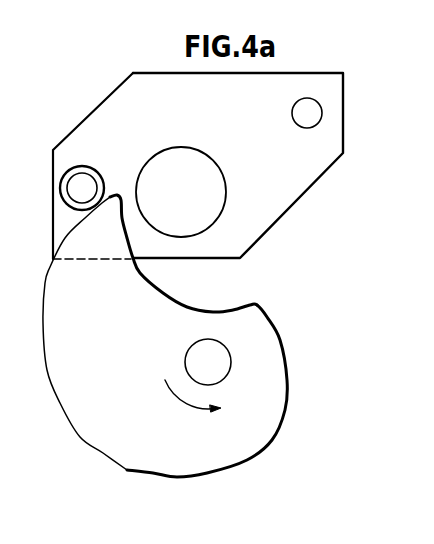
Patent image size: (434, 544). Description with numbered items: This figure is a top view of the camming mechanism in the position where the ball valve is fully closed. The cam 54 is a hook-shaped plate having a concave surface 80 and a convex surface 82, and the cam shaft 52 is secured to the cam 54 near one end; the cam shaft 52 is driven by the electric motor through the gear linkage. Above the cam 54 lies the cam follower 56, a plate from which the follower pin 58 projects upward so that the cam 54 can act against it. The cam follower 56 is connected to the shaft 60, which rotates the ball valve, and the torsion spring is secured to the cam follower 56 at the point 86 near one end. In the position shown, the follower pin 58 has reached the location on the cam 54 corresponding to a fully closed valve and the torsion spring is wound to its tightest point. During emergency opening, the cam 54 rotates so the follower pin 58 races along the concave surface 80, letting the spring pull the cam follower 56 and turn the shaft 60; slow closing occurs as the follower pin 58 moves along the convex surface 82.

The cam shaft 52 is at (197, 363).
The cam 54 is at (165, 336).
The cam follower 56 is at (183, 118).
The follower pin 58 is at (103, 177).
The shaft 60 is at (208, 190).
The concave surface 80 is at (167, 295).
The convex surface 82 is at (100, 450).
The point 86 is at (292, 114).